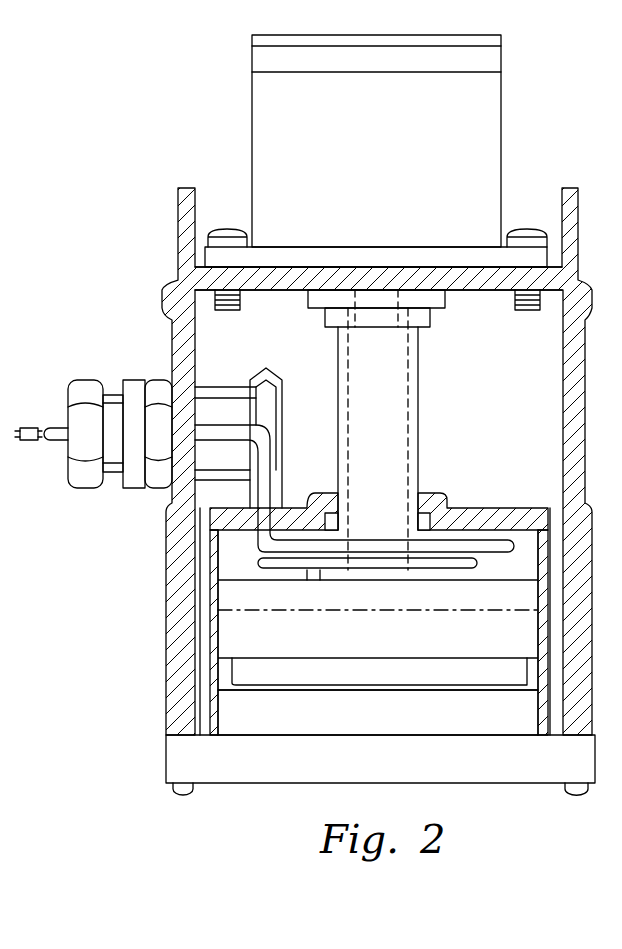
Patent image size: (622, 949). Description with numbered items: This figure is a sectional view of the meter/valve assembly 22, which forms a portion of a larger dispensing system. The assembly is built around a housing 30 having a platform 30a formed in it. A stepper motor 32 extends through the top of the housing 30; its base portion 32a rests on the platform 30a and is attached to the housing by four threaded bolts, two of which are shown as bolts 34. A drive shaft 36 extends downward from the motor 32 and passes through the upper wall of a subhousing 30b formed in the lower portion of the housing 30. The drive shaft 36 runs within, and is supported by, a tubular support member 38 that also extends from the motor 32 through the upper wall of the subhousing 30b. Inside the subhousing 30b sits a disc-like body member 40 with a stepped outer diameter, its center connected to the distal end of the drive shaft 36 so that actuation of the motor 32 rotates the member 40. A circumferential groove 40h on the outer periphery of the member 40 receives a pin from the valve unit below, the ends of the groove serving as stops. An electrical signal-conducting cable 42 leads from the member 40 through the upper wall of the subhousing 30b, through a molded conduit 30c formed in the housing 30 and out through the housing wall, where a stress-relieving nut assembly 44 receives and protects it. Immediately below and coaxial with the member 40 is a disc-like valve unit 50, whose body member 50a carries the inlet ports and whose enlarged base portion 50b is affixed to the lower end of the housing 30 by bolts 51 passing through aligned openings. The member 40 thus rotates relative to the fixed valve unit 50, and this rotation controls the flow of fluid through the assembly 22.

The meter/valve assembly 22 is at (154, 193).
The housing 30 is at (174, 275).
The platform 30a is at (474, 283).
The subhousing 30b is at (527, 513).
The molded conduit 30c is at (285, 388).
The stepper motor 32 is at (254, 134).
The base portion 32a is at (376, 247).
The threaded bolts 34 is at (228, 229).
The drive shaft 36 is at (410, 406).
The tubular support member 38 is at (420, 448).
The body member 40 is at (362, 646).
The circumferential groove 40h is at (518, 665).
The electrical signal-conducting cable 42 is at (30, 427).
The stress-relieving nut assembly 44 is at (133, 385).
The valve unit 50 is at (378, 769).
The body member 50a is at (400, 724).
The base portion 50b is at (400, 770).
The bolts 51 is at (180, 795).